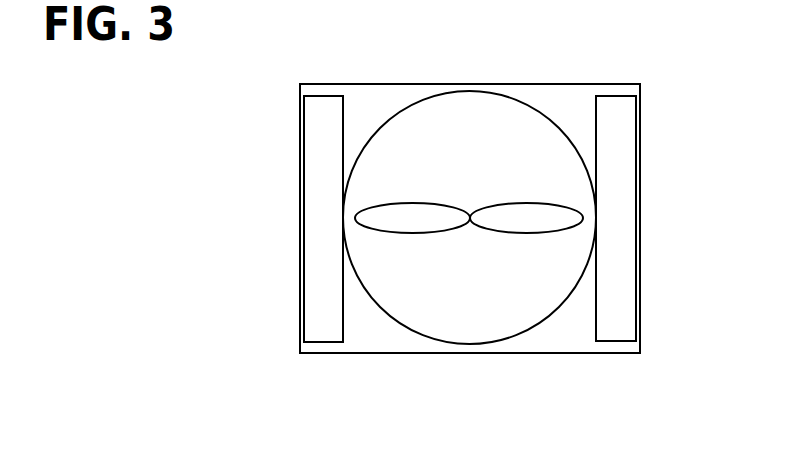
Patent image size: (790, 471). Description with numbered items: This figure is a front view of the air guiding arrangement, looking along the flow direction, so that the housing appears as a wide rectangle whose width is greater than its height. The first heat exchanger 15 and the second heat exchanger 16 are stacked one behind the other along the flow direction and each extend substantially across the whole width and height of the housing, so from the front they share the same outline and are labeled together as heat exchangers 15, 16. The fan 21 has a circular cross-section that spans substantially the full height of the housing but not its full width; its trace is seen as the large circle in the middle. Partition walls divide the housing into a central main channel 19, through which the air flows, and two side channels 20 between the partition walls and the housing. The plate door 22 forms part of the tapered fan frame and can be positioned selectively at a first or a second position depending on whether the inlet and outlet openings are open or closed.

The first heat exchanger 15 is at (608, 219).
The second heat exchanger 16 is at (616, 218).
The main channel 19 is at (595, 362).
The side channel 20 is at (640, 362).
The fan 21 is at (470, 212).
The plate door 22 is at (358, 322).